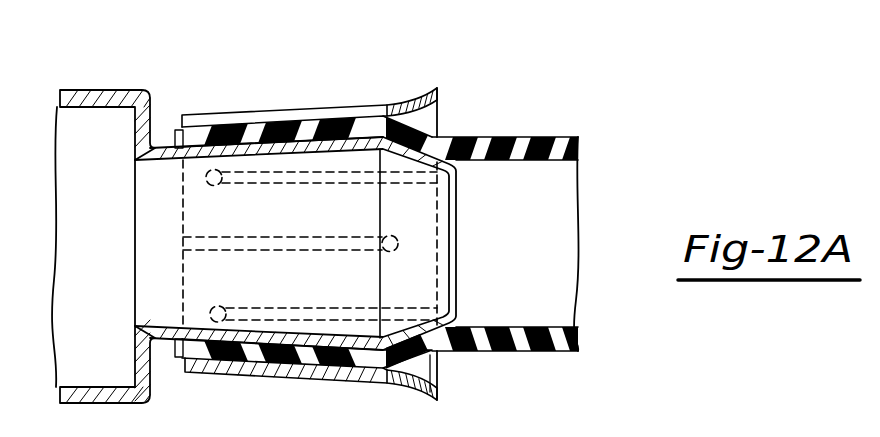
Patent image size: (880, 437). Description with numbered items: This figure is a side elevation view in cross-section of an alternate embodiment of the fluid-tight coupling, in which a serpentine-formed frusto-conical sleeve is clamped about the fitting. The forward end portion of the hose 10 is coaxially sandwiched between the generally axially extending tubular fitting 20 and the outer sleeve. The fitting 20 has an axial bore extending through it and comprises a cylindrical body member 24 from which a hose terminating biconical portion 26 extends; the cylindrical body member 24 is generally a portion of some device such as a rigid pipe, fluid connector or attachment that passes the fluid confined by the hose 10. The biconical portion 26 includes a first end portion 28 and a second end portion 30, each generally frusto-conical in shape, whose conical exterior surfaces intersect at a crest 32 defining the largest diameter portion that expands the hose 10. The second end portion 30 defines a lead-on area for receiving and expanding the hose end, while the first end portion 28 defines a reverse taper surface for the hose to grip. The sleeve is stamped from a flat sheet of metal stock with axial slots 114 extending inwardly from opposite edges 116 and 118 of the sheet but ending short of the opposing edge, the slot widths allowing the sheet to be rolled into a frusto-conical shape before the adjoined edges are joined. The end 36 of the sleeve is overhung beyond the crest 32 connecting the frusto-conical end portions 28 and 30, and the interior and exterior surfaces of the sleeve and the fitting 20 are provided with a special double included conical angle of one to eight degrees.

The hose 10 is at (522, 152).
The tubular fitting 20 is at (72, 84).
The cylindrical body member 24 is at (104, 97).
The biconical portion 26 is at (258, 357).
The first end portion 28 is at (305, 360).
The second end portion 30 is at (404, 386).
The crest 32 is at (352, 379).
The end 36 is at (408, 103).
The axial slots 114 is at (222, 118).
The edge 116 is at (178, 128).
The edge 118 is at (431, 97).